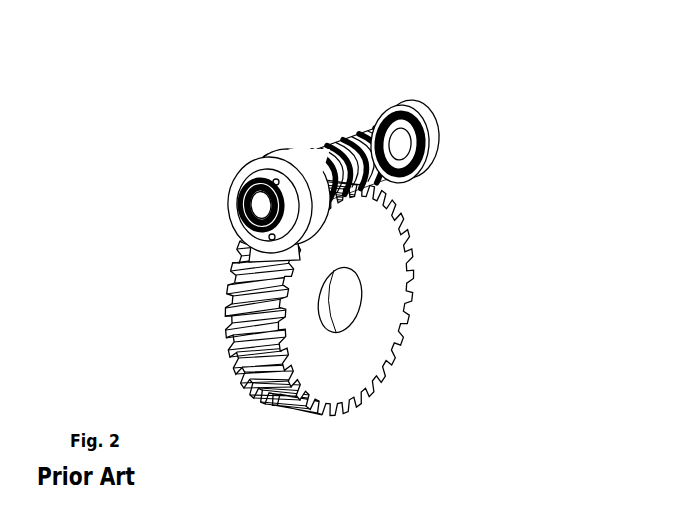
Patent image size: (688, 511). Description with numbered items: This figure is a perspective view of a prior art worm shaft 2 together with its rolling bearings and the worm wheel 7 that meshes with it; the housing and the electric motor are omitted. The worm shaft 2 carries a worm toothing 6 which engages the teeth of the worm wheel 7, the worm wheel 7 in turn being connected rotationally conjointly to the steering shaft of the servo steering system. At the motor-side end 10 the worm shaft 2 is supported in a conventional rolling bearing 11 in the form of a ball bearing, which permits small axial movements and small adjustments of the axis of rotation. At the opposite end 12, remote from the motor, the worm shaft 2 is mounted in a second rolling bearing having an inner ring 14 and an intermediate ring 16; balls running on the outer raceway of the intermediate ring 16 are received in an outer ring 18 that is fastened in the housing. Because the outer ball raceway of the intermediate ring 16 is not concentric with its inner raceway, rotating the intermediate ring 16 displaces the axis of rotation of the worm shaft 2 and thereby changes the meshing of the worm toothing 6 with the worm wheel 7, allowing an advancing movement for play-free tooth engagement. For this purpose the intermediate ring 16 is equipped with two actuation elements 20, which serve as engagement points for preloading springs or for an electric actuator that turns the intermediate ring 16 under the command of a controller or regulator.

The worm shaft 2 is at (348, 132).
The worm toothing 6 is at (343, 142).
The worm wheel 7 is at (373, 283).
The motor-side end 10 is at (440, 125).
The rolling bearing 11 is at (410, 110).
The end remote from the motor 12 is at (248, 206).
The inner ring 14 is at (233, 180).
The intermediate ring 16 is at (257, 230).
The outer ring 18 is at (263, 158).
The actuation elements 20 is at (276, 157).